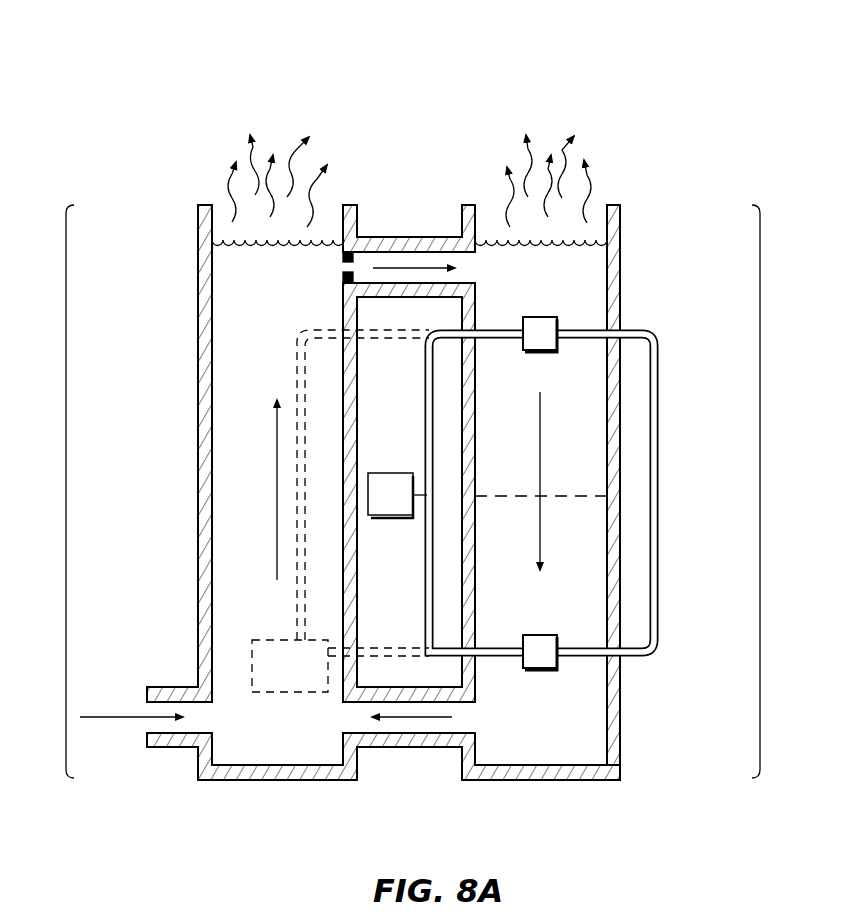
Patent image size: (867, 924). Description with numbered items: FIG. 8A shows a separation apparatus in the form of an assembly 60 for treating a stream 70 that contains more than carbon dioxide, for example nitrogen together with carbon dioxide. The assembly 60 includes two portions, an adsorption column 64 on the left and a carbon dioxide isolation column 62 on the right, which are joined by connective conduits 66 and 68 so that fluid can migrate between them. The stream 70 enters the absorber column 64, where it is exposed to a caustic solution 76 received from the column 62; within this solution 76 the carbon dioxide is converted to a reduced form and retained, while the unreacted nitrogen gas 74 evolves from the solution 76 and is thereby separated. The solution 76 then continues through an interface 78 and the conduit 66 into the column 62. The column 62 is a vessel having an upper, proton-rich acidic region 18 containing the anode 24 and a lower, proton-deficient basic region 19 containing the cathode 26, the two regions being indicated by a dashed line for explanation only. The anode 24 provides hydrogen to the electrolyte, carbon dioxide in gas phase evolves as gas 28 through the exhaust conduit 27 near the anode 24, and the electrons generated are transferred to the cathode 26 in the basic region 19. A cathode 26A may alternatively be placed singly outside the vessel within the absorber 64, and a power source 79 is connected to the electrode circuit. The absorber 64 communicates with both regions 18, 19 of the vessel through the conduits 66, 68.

The assembly 60 is at (667, 65).
The nitrogen gas 74 is at (270, 187).
The gas 28 is at (547, 187).
The connective conduit 66 is at (437, 237).
The interface 78 is at (357, 262).
The exhaust conduit 27 is at (620, 213).
The anode 24 is at (535, 322).
The solution 76 is at (250, 439).
The adsorption column 64 is at (121, 491).
The CO2 isolation column 62 is at (776, 491).
The region 18 is at (580, 440).
The power source 79 is at (397, 471).
The cathode 26 is at (545, 640).
The region 19 is at (578, 615).
The cathode 26A is at (303, 692).
The stream 70 is at (102, 717).
The connective conduit 68 is at (417, 748).